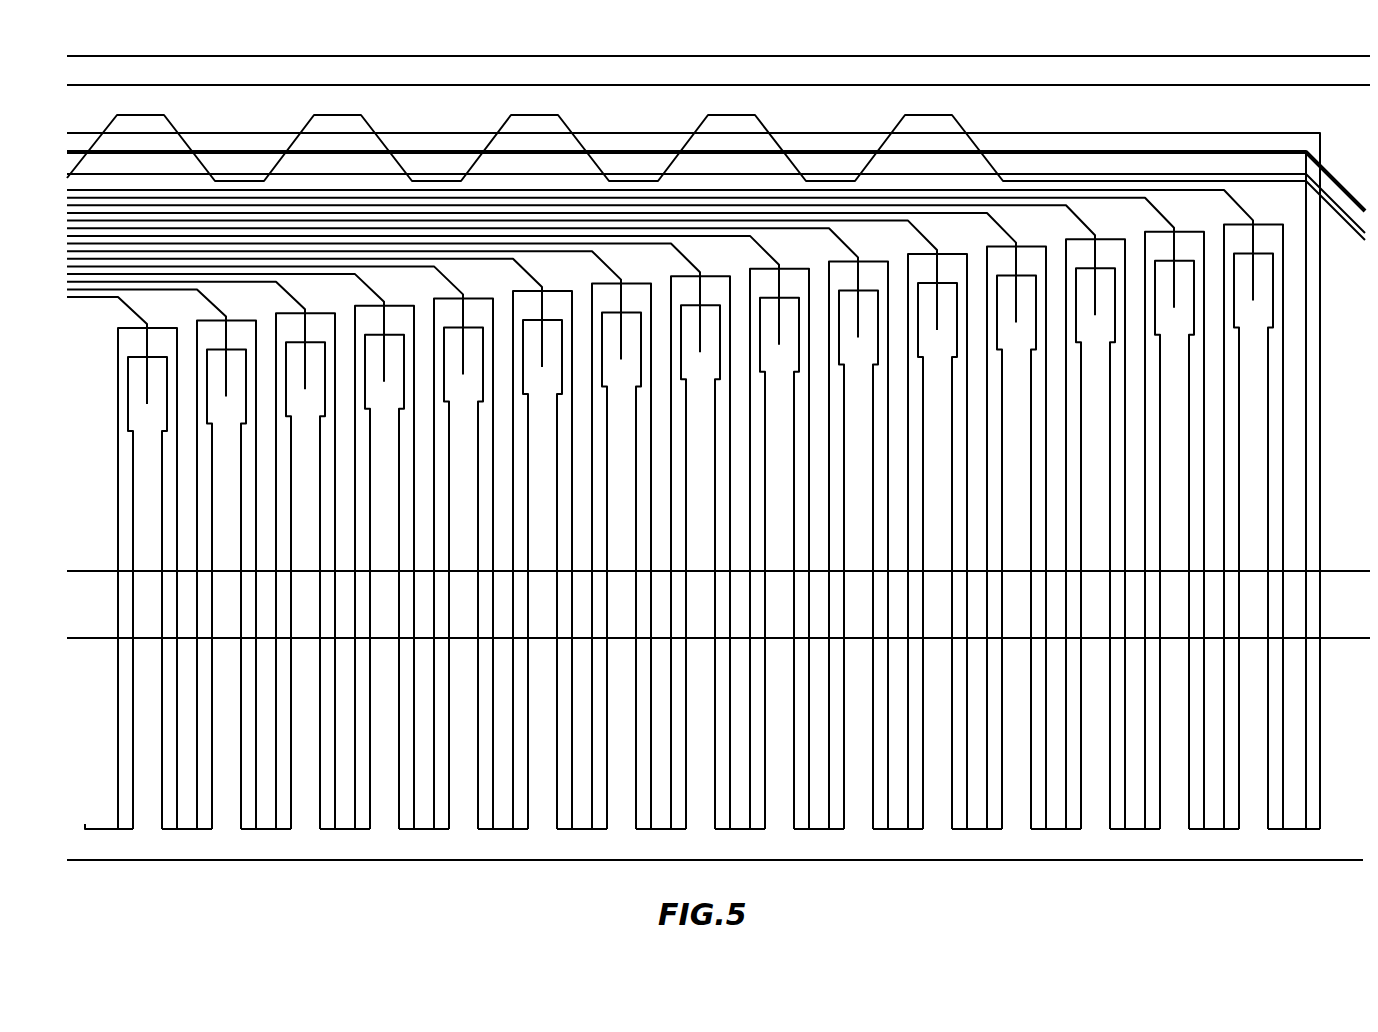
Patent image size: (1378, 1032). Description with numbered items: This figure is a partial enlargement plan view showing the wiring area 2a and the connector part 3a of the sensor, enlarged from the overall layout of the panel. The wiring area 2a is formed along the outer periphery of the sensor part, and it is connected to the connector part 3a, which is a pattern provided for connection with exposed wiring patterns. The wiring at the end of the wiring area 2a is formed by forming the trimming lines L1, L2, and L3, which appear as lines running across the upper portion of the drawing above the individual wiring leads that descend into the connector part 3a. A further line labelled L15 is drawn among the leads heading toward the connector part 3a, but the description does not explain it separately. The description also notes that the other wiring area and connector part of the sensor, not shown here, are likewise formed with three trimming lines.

The trimming line L1 is at (575, 122).
The trimming line L2 is at (773, 122).
The trimming line L3 is at (1032, 152).
The signal line L15 is at (1243, 207).
The wiring area 2a is at (87, 267).
The connector part 3a is at (1306, 728).